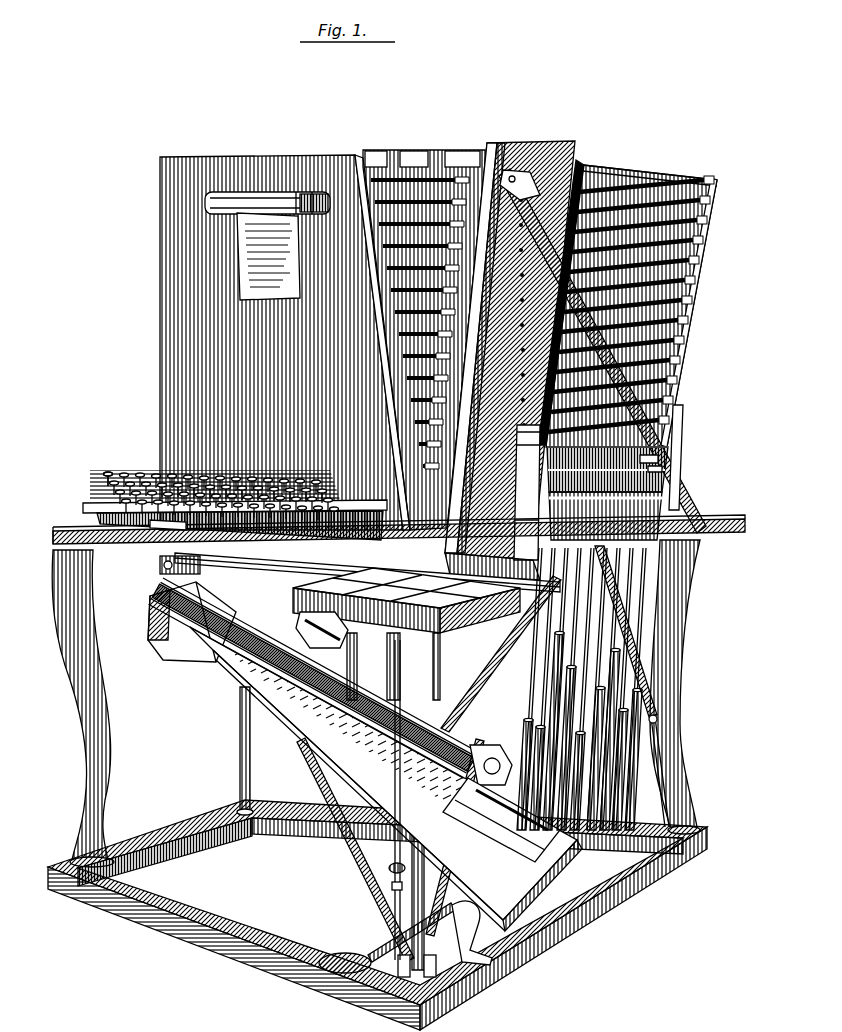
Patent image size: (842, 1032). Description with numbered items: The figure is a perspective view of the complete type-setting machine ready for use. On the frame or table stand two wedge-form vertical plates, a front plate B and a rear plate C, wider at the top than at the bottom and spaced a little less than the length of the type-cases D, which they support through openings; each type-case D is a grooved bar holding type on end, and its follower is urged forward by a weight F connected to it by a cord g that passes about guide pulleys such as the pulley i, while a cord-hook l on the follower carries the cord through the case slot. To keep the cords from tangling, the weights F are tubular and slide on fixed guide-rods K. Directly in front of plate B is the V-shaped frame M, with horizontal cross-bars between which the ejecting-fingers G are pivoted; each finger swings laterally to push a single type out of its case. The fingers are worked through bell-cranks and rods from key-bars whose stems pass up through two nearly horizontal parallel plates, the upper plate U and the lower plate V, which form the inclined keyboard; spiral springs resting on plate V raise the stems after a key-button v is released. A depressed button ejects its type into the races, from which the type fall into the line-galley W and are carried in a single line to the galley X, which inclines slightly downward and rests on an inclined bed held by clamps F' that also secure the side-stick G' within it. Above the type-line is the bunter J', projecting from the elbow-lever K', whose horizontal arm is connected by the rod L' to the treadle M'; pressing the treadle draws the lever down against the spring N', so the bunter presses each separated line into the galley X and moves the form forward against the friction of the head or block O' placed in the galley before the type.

The ejecting-finger G is at (424, 336).
The front vertical plate B is at (588, 168).
The rear vertical plate C is at (631, 306).
The V-shaped frame M is at (514, 360).
The type-case D is at (615, 463).
The pulley i is at (650, 462).
The cord g is at (660, 471).
The key-button v is at (103, 481).
The upper keyboard plate U is at (235, 505).
The line-galley W is at (367, 561).
The lower keyboard plate V is at (152, 527).
The bunter J' is at (155, 580).
The galley X is at (238, 620).
The cord-hook l is at (327, 633).
The elbow-lever K' is at (386, 779).
The head or block O' is at (314, 678).
The clamp F' is at (491, 755).
The side-stick G' is at (501, 820).
The guide-rod K is at (656, 686).
The weight F is at (608, 689).
The rod L' is at (365, 800).
The spring N' is at (362, 883).
The treadle M' is at (405, 937).